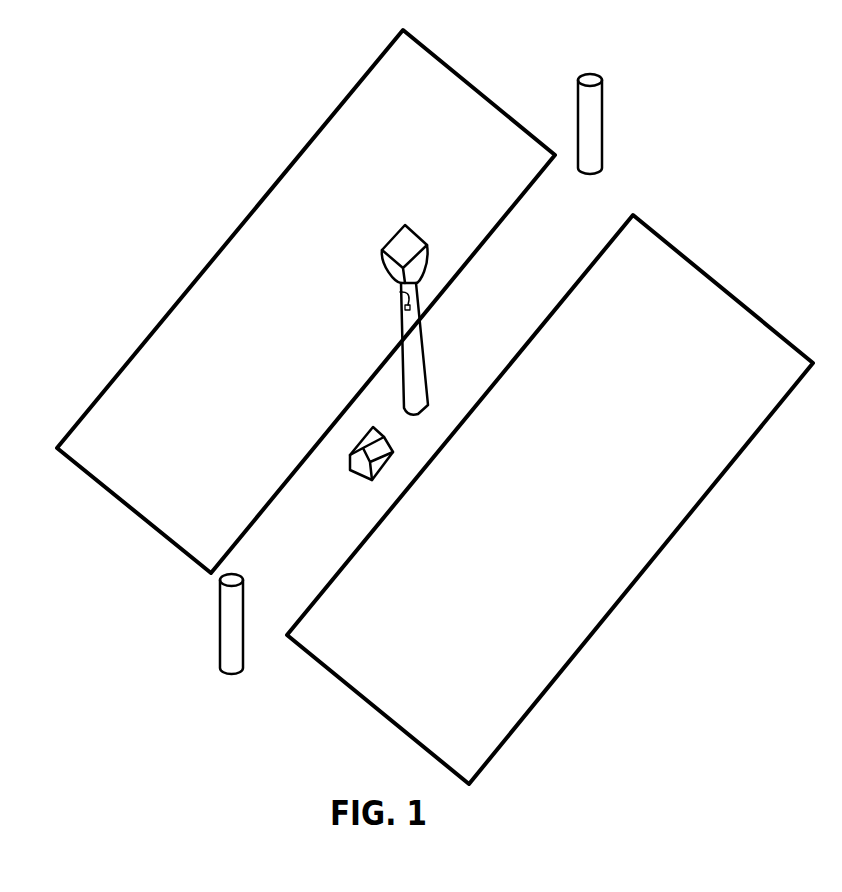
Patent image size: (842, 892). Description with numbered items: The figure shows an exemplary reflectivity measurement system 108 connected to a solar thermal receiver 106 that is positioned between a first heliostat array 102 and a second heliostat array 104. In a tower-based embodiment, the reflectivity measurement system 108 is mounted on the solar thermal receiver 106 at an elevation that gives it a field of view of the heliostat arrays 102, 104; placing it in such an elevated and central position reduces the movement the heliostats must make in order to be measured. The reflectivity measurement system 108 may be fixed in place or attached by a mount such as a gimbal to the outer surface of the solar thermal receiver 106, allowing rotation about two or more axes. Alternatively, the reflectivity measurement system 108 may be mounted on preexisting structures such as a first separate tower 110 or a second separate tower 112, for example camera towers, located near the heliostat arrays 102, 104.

The first heliostat array 102 is at (762, 335).
The second heliostat array 104 is at (472, 142).
The solar thermal receiver 106 is at (400, 250).
The reflectivity measurement system 108 is at (400, 292).
The first separate tower 110 is at (232, 623).
The second separate tower 112 is at (593, 130).